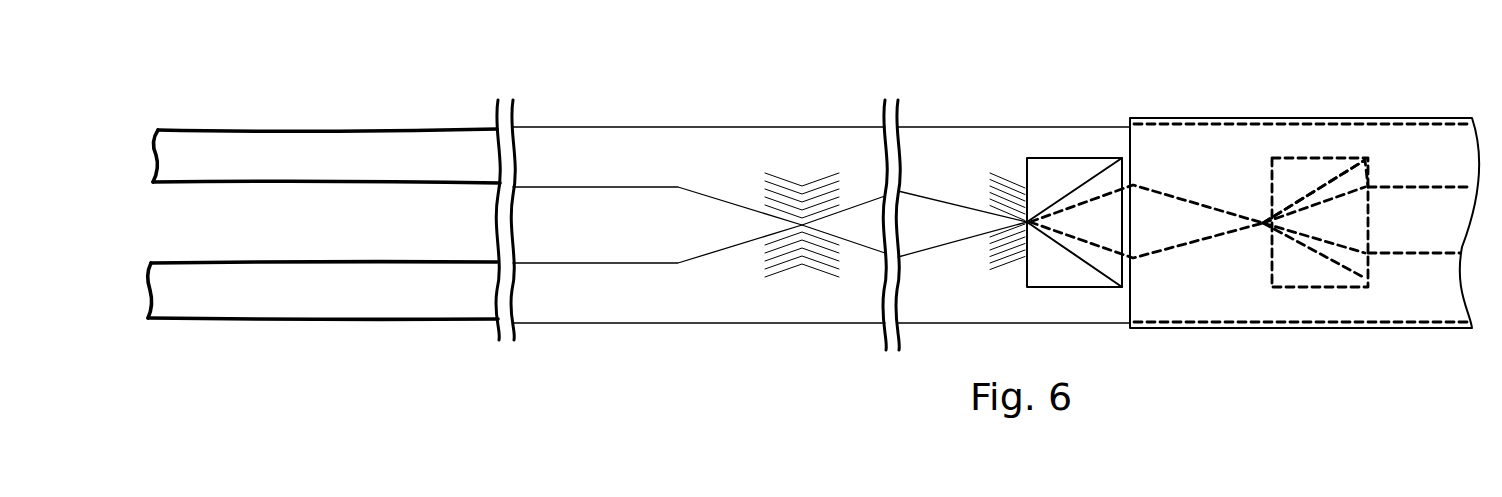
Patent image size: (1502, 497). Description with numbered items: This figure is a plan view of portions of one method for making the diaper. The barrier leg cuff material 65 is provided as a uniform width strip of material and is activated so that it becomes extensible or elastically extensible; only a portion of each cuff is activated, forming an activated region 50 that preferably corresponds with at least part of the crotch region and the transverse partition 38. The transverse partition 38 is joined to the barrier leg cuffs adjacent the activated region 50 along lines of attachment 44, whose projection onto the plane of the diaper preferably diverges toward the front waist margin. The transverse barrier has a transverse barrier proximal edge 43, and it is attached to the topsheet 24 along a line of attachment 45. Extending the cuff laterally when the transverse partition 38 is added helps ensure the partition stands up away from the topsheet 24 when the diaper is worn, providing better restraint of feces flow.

The barrier leg cuff material 65 is at (373, 297).
The activated region 50 is at (840, 120).
The transverse partition 38 is at (1033, 165).
The lines of attachment 44 is at (1075, 183).
The topsheet 24 is at (1445, 150).
The transverse barrier proximal edge 43 is at (1368, 172).
The line of attachment between the topsheet and the transverse barrier 45 is at (1340, 280).